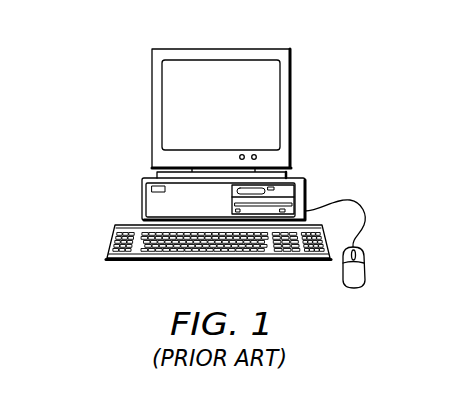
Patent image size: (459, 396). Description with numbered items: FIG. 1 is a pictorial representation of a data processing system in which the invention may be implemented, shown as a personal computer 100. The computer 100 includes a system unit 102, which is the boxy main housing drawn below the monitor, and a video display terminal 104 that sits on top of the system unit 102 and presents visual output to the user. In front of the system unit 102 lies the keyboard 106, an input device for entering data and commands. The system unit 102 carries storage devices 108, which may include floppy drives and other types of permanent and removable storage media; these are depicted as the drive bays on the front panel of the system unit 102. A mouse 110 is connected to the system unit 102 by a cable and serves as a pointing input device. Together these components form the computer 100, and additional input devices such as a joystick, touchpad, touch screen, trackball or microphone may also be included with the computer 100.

The computer 100 is at (90, 94).
The system unit 102 is at (142, 197).
The video display terminal 104 is at (290, 106).
The keyboard 106 is at (133, 262).
The storage devices 108 is at (272, 190).
The mouse 110 is at (352, 288).